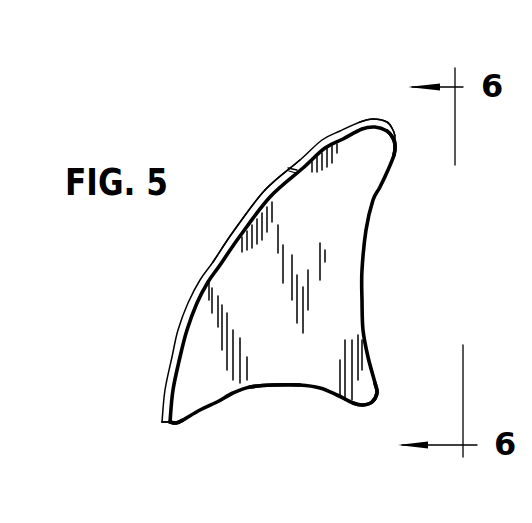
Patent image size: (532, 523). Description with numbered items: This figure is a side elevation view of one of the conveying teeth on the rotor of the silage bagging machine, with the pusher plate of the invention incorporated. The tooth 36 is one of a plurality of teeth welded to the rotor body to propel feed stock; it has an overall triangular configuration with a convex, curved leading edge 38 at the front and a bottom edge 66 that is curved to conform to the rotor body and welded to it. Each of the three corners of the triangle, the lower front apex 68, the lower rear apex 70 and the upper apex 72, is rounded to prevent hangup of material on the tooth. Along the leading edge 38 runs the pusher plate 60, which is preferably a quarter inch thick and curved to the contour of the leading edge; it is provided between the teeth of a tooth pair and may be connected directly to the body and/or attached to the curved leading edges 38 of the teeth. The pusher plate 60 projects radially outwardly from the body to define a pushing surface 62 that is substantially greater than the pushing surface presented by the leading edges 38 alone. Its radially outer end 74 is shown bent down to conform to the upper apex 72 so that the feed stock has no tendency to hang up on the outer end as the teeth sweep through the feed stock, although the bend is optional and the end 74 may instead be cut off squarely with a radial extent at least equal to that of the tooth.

The conveying tooth 36 is at (335, 302).
The leading edge 38 is at (188, 308).
The pusher plate 60 is at (213, 262).
The pushing surface 62 is at (263, 188).
The bottom edge 66 is at (273, 387).
The apex 68 is at (177, 423).
The apex 70 is at (364, 407).
The upper apex 72 is at (396, 143).
The radially outer end 74 is at (378, 119).